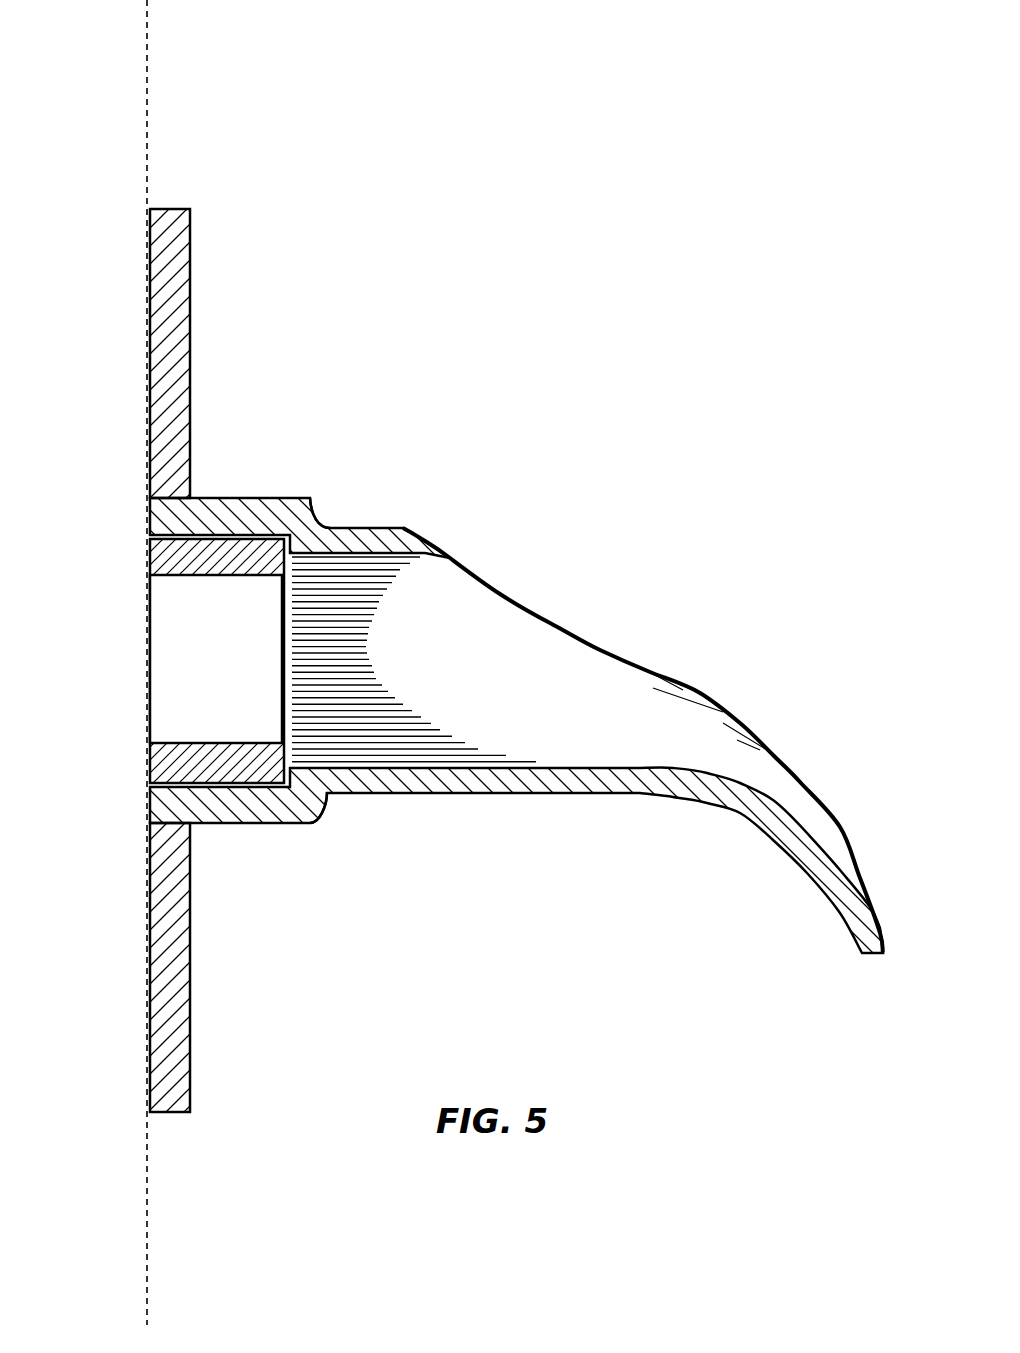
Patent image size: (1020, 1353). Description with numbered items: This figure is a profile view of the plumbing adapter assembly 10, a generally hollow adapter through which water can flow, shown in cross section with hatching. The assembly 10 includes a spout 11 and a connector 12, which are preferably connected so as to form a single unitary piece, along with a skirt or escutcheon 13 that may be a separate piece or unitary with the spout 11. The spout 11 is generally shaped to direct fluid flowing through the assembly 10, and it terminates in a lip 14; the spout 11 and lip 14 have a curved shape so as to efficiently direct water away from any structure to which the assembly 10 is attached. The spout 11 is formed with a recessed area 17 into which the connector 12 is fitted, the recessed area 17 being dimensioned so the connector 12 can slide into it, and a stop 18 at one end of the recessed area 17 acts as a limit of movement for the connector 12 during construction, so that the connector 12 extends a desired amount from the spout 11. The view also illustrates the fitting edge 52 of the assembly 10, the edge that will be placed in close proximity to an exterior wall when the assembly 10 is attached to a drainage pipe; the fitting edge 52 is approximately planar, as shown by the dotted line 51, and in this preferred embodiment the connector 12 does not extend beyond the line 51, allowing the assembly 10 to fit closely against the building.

The assembly 10 is at (626, 449).
The spout 11 is at (577, 667).
The connector 12 is at (182, 669).
The escutcheon 13 is at (192, 952).
The lip 14 is at (840, 832).
The recessed area 17 is at (287, 538).
The stop 18 is at (327, 795).
The dotted line 51 is at (147, 1150).
The fitting edge 52 is at (148, 248).